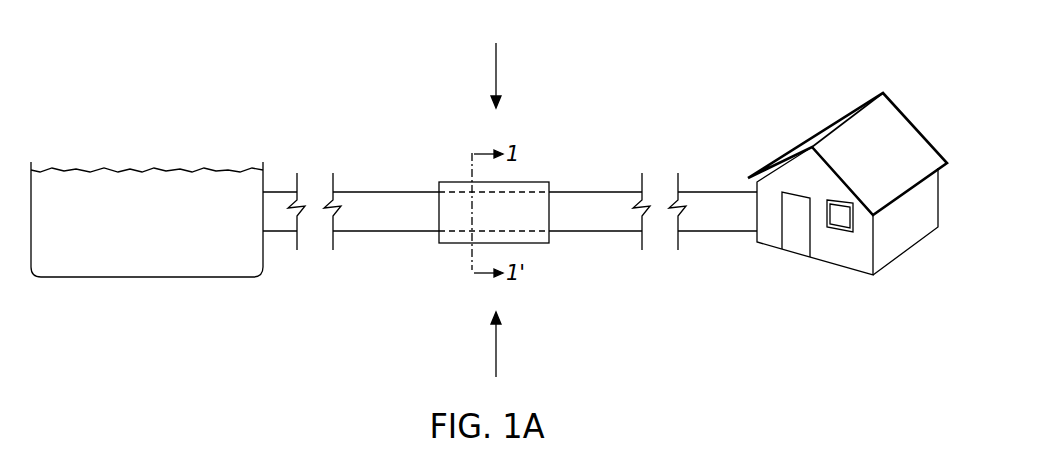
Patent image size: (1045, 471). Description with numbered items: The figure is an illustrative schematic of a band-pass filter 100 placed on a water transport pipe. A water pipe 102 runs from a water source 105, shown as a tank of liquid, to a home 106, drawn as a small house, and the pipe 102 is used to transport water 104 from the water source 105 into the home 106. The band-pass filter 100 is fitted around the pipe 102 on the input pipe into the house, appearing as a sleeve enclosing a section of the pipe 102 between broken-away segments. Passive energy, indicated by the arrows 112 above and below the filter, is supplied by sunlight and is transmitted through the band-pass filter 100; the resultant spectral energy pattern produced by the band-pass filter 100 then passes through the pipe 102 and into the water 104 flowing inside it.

The band-pass filter 100 is at (540, 243).
The water pipe 102 is at (390, 192).
The water 104 is at (429, 215).
The water source 105 is at (97, 183).
The home 106 is at (158, 72).
The arrows (passive energy) 112 is at (496, 73).